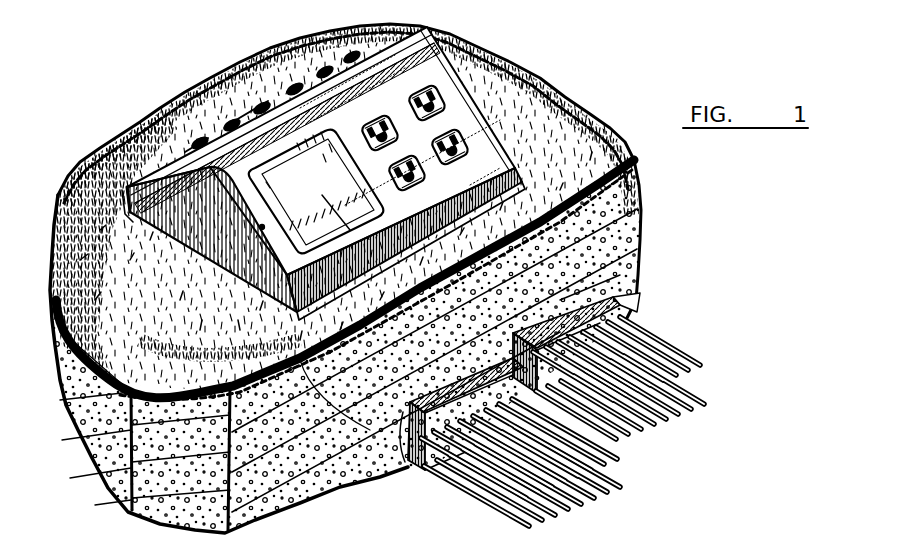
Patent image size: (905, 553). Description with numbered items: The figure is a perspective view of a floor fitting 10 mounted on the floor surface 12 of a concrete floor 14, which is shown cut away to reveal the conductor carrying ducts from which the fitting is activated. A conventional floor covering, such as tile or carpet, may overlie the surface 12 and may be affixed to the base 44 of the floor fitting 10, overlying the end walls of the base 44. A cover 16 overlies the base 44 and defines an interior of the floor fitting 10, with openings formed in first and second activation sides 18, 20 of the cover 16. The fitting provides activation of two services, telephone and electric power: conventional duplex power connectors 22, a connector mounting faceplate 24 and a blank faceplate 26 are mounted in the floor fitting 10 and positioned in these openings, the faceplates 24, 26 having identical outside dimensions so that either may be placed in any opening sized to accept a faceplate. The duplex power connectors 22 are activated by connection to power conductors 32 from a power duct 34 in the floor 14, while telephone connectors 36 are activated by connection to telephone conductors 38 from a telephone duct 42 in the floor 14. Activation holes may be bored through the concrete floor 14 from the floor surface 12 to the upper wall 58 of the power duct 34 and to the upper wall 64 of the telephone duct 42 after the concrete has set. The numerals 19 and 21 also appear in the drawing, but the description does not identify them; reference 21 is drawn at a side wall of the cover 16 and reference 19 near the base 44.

The floor fitting 10 is at (264, 46).
The floor surface 12 is at (578, 138).
The concrete floor 14 is at (628, 222).
The cover 16 is at (397, 60).
The first activation side 18 is at (430, 24).
The housing flange 19 is at (130, 215).
The second activation side 20 is at (482, 127).
The housing side wall 21 is at (522, 176).
The duplex power connectors 22 is at (318, 84).
The connector mounting faceplate 24 is at (173, 162).
The blank faceplate 26 is at (380, 265).
The power conductors 32 is at (684, 357).
The power duct 34 is at (640, 300).
The telephone connectors 36 is at (245, 128).
The telephone conductors 38 is at (600, 458).
The telephone duct 42 is at (412, 468).
The base 44 is at (210, 255).
The upper wall of the power duct 58 is at (622, 280).
The upper wall of the telephone duct 64 is at (410, 450).